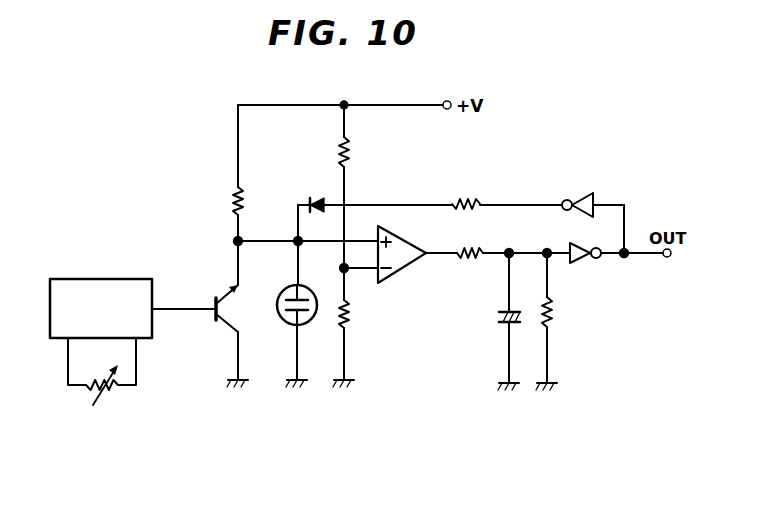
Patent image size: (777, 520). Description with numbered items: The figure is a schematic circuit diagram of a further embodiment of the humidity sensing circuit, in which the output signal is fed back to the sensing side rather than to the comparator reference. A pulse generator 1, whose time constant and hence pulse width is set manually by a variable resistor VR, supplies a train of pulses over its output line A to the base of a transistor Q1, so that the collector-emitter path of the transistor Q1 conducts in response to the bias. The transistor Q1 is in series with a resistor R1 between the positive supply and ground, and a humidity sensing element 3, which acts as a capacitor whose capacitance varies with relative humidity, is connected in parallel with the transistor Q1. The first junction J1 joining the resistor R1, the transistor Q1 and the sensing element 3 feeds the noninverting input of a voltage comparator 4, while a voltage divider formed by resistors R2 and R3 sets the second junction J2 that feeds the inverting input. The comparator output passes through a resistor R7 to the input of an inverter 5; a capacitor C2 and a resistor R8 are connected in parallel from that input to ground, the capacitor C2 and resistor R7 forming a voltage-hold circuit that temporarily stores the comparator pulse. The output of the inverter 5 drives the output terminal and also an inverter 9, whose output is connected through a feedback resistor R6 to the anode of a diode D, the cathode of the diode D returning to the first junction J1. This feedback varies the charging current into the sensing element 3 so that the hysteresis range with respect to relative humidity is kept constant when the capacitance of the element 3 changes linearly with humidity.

The pulse generator 1 is at (103, 279).
The humidity sensing element 3 is at (307, 322).
The voltage comparator 4 is at (410, 246).
The inverter 5 is at (590, 262).
The inverter 9 is at (580, 197).
The pulse generator output line A is at (190, 308).
The diode D is at (318, 202).
The first junction J1 is at (236, 240).
The second junction J2 is at (343, 268).
The transistor Q1 is at (231, 314).
The resistor R1 is at (244, 200).
The resistor R2 is at (350, 152).
The resistor R3 is at (350, 314).
The feedback resistor R6 is at (463, 201).
The resistor R7 is at (474, 250).
The resistor R8 is at (553, 307).
The capacitor C2 is at (498, 318).
The variable resistor VR is at (102, 381).